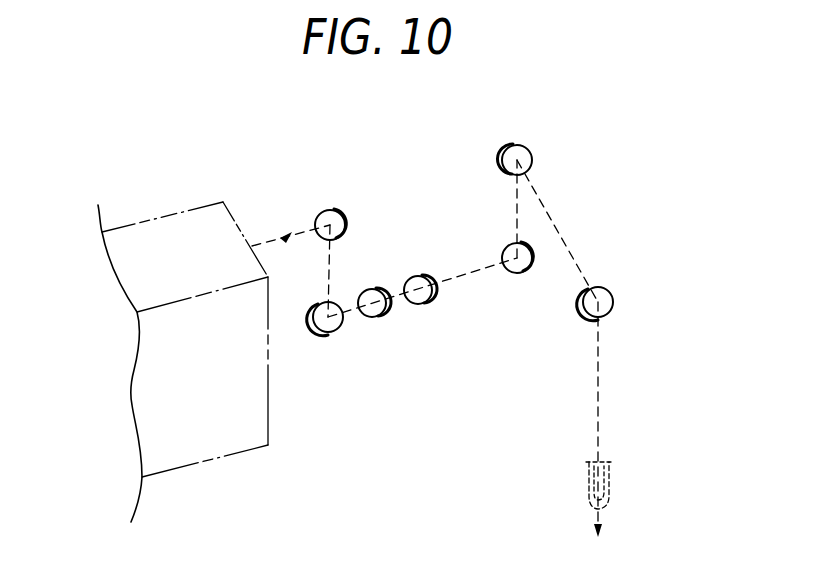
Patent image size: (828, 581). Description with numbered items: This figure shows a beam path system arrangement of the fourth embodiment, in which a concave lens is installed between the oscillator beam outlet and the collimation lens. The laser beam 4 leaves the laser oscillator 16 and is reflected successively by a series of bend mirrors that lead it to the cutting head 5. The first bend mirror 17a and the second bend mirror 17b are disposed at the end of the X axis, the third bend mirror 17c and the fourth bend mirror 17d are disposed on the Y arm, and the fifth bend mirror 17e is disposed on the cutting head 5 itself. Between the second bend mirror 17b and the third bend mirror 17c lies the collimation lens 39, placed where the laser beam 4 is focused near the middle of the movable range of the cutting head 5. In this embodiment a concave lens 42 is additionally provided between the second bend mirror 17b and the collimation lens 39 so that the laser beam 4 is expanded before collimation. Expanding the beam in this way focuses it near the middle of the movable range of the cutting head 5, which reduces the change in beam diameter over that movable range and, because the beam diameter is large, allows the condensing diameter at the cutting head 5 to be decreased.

The laser oscillator 16 is at (132, 225).
The laser beam 4 is at (280, 236).
The first bend mirror 17a is at (345, 210).
The second bend mirror 17b is at (322, 335).
The third bend mirror 17c is at (517, 275).
The fourth bend mirror 17d is at (513, 146).
The fifth bend mirror 17e is at (614, 305).
The collimation lens 39 is at (425, 305).
The concave lens 42 is at (372, 318).
The cutting head 5 is at (612, 480).